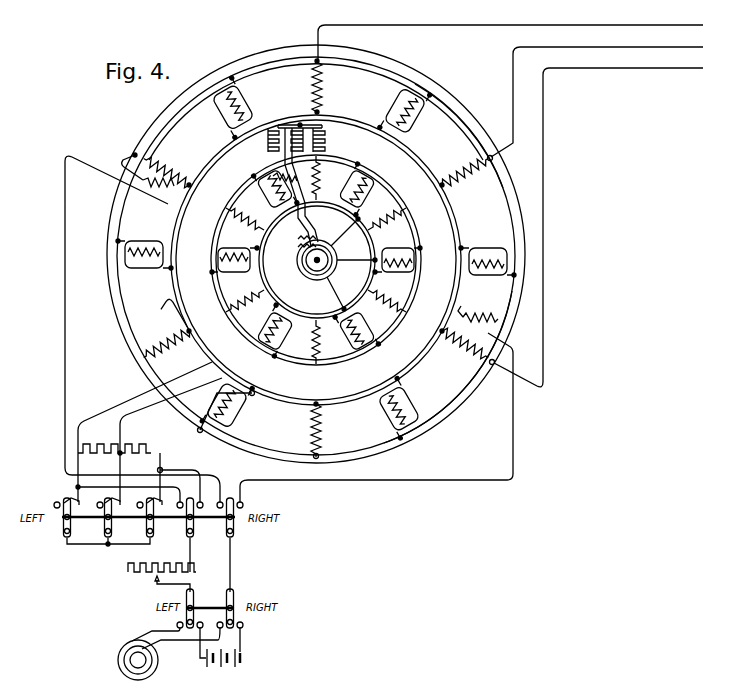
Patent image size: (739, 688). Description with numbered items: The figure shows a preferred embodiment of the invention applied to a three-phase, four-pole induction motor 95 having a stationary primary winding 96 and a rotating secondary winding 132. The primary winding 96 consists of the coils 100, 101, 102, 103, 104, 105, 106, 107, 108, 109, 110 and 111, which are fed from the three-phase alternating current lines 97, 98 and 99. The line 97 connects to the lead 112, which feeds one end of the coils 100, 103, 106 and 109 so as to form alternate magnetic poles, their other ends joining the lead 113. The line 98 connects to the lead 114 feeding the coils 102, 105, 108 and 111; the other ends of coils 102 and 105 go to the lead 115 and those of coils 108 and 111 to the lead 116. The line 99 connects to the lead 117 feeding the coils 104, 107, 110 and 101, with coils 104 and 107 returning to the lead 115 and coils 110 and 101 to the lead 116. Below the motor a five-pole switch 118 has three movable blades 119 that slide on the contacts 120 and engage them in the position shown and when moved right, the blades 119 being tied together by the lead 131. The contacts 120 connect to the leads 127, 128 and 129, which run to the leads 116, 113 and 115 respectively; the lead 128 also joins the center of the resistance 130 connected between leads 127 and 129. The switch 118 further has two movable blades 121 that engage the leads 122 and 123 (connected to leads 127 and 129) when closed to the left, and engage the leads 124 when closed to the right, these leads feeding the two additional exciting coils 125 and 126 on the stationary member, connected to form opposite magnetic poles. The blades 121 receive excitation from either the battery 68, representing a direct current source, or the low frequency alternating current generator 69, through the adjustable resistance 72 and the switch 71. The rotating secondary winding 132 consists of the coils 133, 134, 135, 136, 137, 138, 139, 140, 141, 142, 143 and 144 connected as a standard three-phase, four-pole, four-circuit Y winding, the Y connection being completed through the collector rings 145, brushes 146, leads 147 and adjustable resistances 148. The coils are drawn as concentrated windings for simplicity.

The battery 68 is at (235, 640).
The low frequency alternating current generator 69 is at (130, 648).
The switch 71 is at (207, 613).
The adjustable resistance 72 is at (160, 563).
The three-phase, four-pole induction motor 95 is at (316, 254).
The stationary primary winding 96 is at (531, 273).
The three-phase alternating current line 97 is at (653, 25).
The three-phase alternating current line 98 is at (653, 47).
The three-phase alternating current line 99 is at (653, 68).
The coil 100 is at (324, 82).
The coil 101 is at (398, 110).
The coil 102 is at (458, 172).
The coil 103 is at (489, 255).
The coil 104 is at (462, 352).
The coil 105 is at (406, 392).
The coil 106 is at (322, 431).
The coil 107 is at (238, 406).
The coil 108 is at (162, 352).
The coil 109 is at (157, 265).
The coil 110 is at (166, 172).
The coil 111 is at (219, 114).
The lead 112 is at (450, 117).
The lead 113 is at (218, 139).
The lead 114 is at (498, 189).
The lead 115 is at (459, 290).
The lead 116 is at (202, 158).
The lead 117 is at (484, 380).
The five-pole switch 118 is at (172, 519).
The movable blades 119 is at (117, 528).
The contacts 120 is at (159, 502).
The movable blades 121 is at (197, 530).
The lead 122 is at (172, 483).
The lead 123 is at (208, 474).
The leads 124 is at (252, 479).
The additional exciting coil 125 is at (480, 322).
The additional exciting coil 126 is at (158, 198).
The lead 127 is at (143, 392).
The lead 128 is at (150, 400).
The lead 129 is at (202, 390).
The resistance 130 is at (101, 446).
The lead 131 is at (103, 546).
The rotating secondary winding 132 is at (316, 256).
The coil 133 is at (323, 178).
The coil 134 is at (362, 192).
The coil 135 is at (386, 222).
The coil 136 is at (393, 272).
The coil 137 is at (385, 302).
The coil 138 is at (350, 334).
The coil 139 is at (312, 342).
The coil 140 is at (268, 322).
The coil 141 is at (250, 296).
The coil 142 is at (236, 247).
The coil 143 is at (254, 220).
The coil 144 is at (270, 190).
The collector rings 145 is at (308, 268).
The brushes 146 is at (314, 240).
The leads 147 is at (282, 170).
The adjustable resistances 148 is at (288, 146).